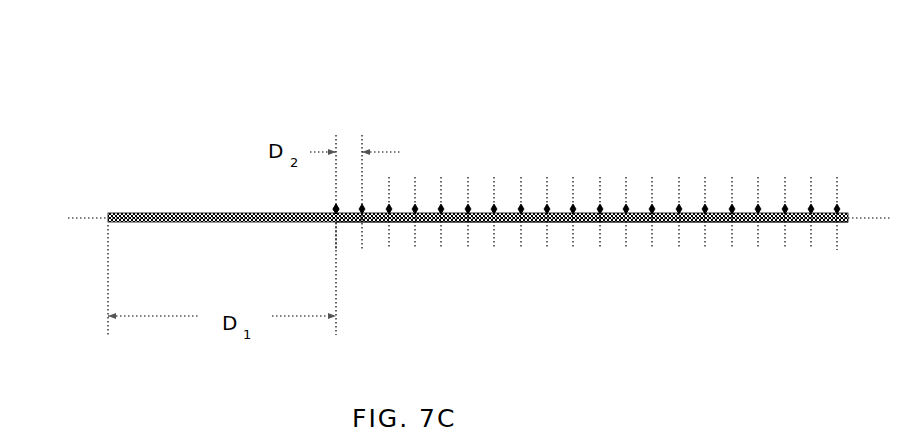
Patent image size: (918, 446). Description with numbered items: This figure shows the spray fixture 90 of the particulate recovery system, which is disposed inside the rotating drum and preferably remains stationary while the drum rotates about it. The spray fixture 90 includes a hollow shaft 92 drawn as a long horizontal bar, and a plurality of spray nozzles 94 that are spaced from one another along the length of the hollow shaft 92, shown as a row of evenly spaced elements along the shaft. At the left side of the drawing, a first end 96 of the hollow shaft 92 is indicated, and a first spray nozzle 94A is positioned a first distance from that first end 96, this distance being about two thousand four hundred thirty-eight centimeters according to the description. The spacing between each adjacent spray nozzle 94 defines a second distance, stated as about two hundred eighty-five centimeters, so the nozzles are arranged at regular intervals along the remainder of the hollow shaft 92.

The spray fixture 90 is at (713, 126).
The hollow shaft 92 is at (540, 217).
The spray nozzles 94 is at (521, 210).
The first spray nozzle 94A is at (336, 210).
The first end 96 is at (108, 213).